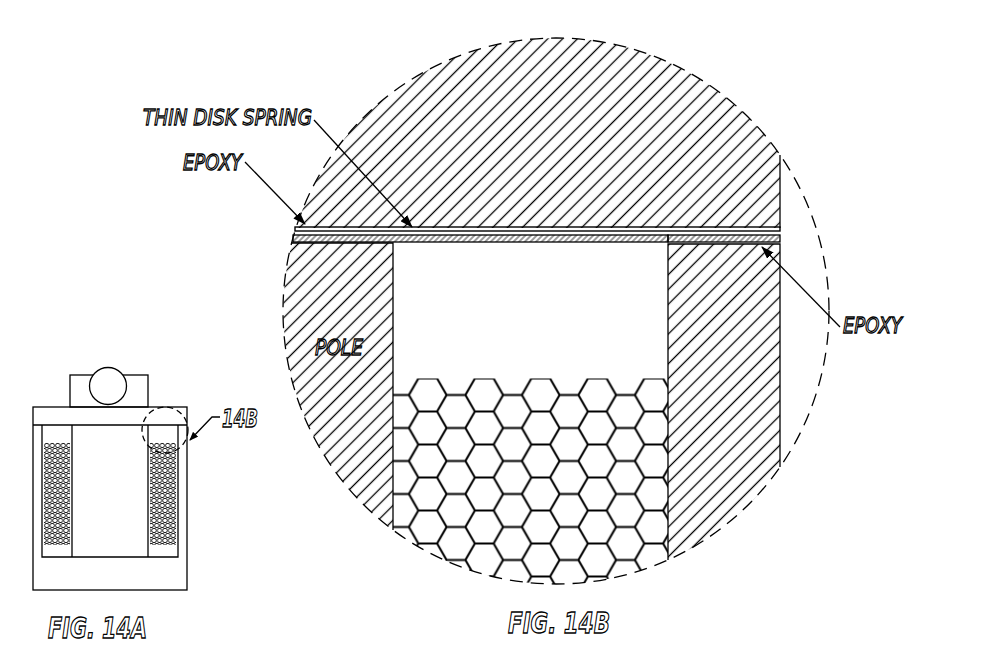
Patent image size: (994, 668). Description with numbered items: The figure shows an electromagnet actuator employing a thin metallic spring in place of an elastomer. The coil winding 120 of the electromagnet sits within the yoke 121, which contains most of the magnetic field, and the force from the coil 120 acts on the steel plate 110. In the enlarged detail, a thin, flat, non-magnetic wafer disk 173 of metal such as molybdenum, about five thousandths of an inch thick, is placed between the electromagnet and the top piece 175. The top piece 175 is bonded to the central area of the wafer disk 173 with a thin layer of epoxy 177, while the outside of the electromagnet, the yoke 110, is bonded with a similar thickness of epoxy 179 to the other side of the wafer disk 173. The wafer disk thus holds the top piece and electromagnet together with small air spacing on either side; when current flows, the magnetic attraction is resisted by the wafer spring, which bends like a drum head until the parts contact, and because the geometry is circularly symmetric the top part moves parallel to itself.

In FIG. 14A, the steel plate 110 is at (177, 577).
In FIG. 14A, the coil winding 120 is at (167, 507).
In FIG. 14B, the coil winding 120 is at (545, 492).
In FIG. 14B, the yoke 121 is at (750, 402).
In FIG. 14B, the wafer disk 173 is at (480, 260).
In FIG. 14B, the top piece 175 is at (538, 128).
In FIG. 14B, the epoxy 177 is at (537, 251).
In FIG. 14B, the epoxy 179 is at (767, 232).